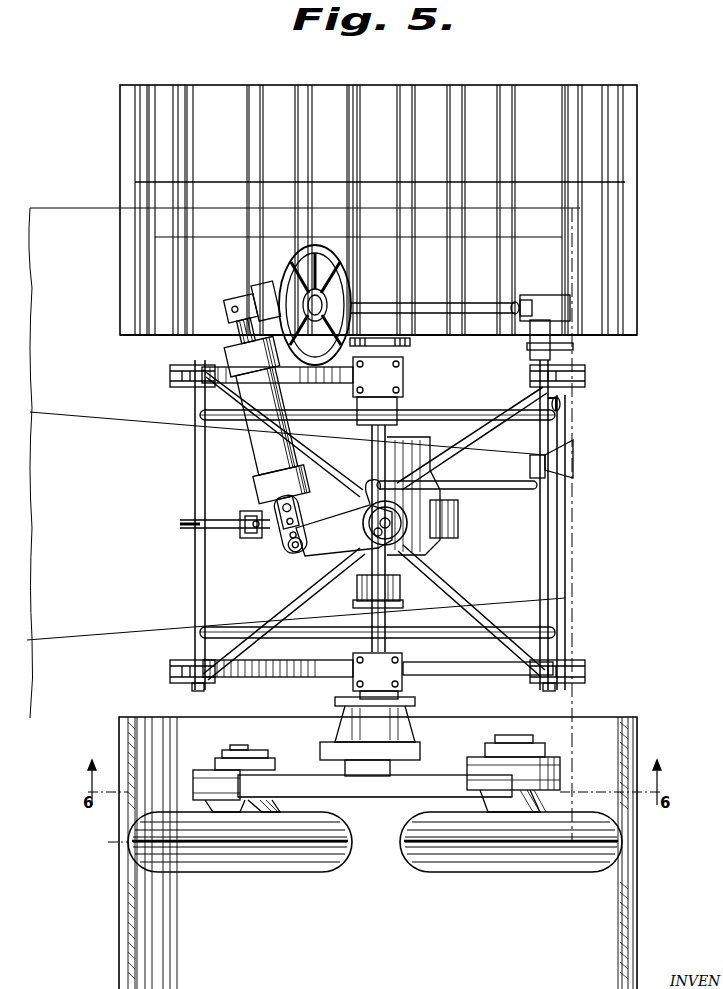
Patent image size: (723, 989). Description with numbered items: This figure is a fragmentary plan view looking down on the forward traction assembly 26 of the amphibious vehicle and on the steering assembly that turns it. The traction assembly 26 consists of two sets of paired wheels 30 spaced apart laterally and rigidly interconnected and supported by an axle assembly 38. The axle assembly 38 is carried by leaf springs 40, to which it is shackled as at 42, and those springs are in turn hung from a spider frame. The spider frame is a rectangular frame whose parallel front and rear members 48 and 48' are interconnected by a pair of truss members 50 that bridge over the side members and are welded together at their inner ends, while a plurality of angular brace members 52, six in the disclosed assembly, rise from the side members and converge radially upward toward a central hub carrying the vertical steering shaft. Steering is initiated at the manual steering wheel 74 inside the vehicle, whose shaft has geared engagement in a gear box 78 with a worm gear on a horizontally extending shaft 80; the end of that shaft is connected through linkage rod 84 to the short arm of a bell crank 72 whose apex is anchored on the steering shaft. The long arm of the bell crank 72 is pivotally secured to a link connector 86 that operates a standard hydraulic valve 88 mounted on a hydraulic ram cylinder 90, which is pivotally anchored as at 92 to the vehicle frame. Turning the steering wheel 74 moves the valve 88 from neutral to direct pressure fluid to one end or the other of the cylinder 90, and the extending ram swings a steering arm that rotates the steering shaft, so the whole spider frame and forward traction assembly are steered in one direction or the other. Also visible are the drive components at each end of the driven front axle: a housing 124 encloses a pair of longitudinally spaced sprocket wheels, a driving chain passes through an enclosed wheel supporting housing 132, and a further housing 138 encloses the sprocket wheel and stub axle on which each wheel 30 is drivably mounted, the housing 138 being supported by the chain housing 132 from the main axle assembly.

The front traction assembly 26 is at (446, 930).
The wheels 30 is at (224, 872).
The axle assembly 38 is at (386, 648).
The leaf springs 40 is at (269, 678).
The shackle 42 is at (355, 682).
The front member 48 is at (503, 525).
The rear member 48' is at (256, 525).
The truss members 50 is at (499, 420).
The angular brace members 52 is at (300, 598).
The bell crank 72 is at (362, 479).
The manual steering wheel 74 is at (330, 262).
The gear box 78 is at (552, 296).
The horizontally extending shaft 80 is at (556, 399).
The linkage rod 84 is at (481, 487).
The link connector 86 is at (288, 537).
The hydraulic valve 88 is at (258, 504).
The hydraulic ram cylinder 90 is at (264, 455).
The pivotal anchor 92 is at (236, 300).
The housing 124 is at (352, 754).
The wheel supporting housing 132 is at (302, 780).
The housing 138 is at (212, 770).